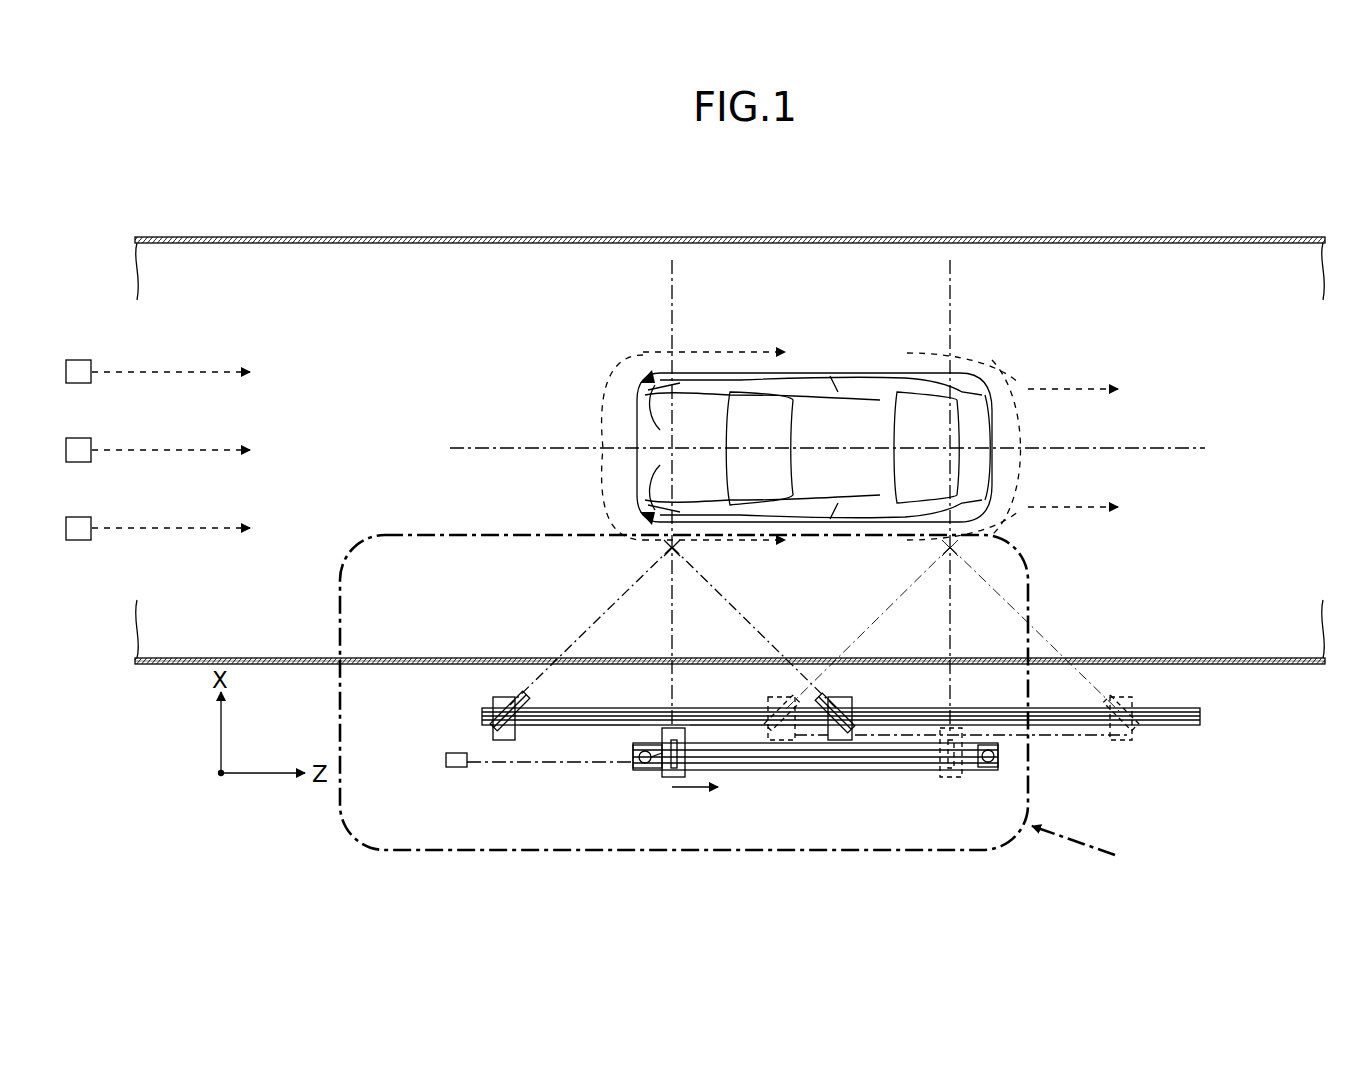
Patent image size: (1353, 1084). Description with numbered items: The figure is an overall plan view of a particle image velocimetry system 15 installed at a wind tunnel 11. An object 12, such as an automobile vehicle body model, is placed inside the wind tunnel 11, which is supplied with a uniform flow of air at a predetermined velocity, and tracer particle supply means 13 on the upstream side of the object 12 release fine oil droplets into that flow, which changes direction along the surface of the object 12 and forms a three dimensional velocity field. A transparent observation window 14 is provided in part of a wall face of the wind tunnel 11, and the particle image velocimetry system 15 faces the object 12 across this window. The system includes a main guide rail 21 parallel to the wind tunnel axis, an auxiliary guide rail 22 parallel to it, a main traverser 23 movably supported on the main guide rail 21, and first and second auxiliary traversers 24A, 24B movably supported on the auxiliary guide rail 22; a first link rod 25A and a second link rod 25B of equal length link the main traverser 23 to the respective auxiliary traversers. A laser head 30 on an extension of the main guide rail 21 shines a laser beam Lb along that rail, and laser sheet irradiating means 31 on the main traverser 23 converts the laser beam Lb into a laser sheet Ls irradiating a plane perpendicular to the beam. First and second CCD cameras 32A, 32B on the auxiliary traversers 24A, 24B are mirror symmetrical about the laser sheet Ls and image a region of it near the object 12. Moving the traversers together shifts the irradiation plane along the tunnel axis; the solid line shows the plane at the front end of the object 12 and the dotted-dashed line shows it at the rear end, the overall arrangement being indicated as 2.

The vehicle inspection device 2 is at (741, 711).
The wind tunnel 11 is at (698, 228).
The object 12 is at (850, 415).
The tracer particle supply means 13 is at (83, 362).
The transparent observation window 14 is at (623, 662).
The particle image velocimetry system 15 is at (807, 755).
The main guide rail 21 is at (888, 768).
The auxiliary guide rail 22 is at (978, 718).
The main traverser 23 is at (672, 778).
The first auxiliary traverser 24A is at (505, 742).
The second auxiliary traverser 24B is at (842, 742).
The first link rod 25A is at (588, 742).
The second link rod 25B is at (748, 742).
The laser head 30 is at (455, 768).
The laser sheet irradiating means 31 is at (648, 768).
The first CCD camera 32A is at (503, 705).
The second CCD camera 32B is at (852, 705).
The laser sheet Ls is at (678, 625).
The laser beam Lb is at (538, 765).